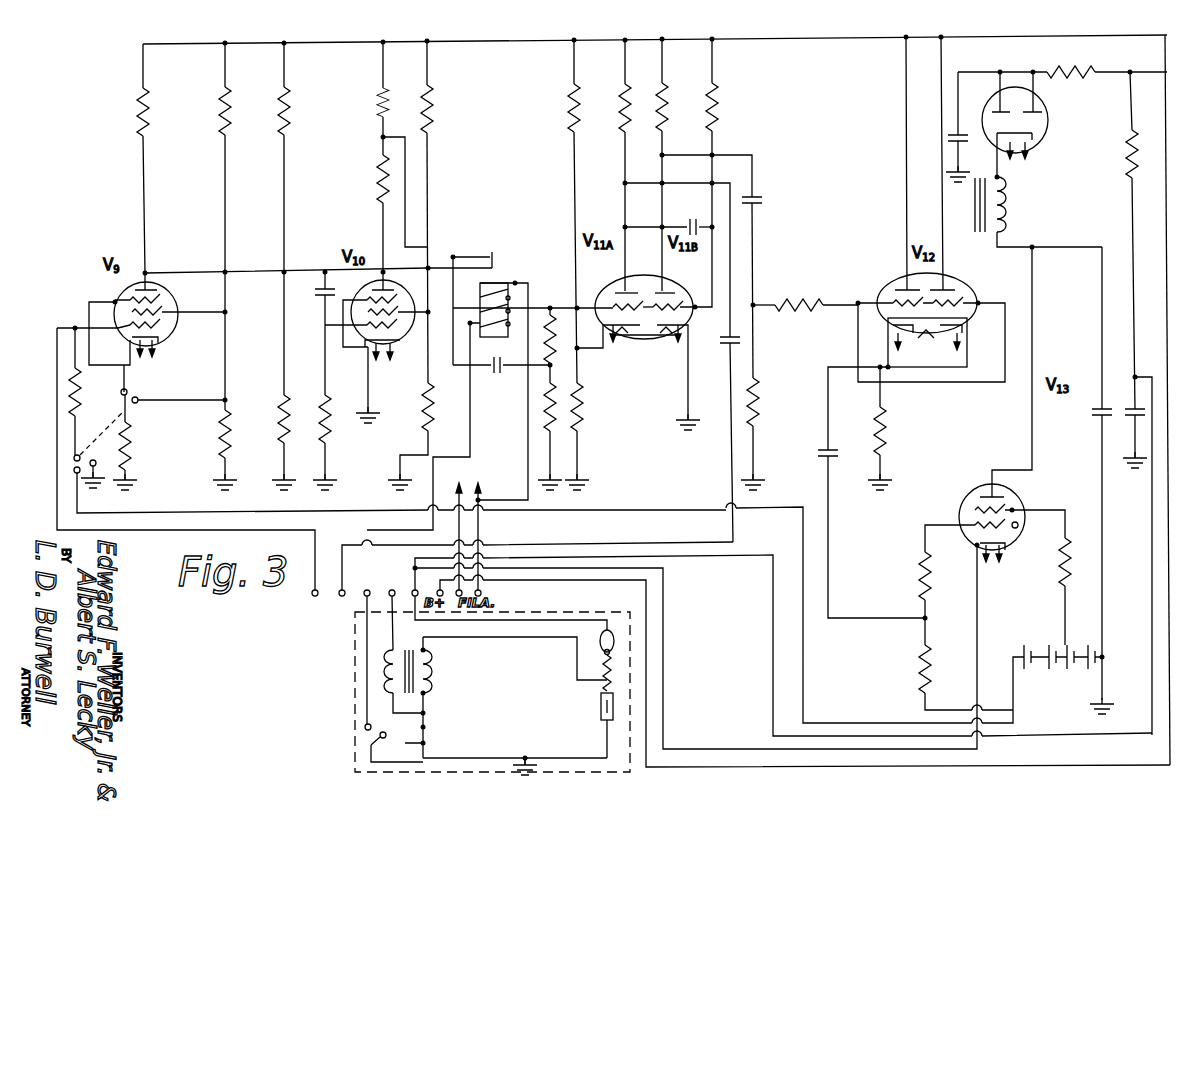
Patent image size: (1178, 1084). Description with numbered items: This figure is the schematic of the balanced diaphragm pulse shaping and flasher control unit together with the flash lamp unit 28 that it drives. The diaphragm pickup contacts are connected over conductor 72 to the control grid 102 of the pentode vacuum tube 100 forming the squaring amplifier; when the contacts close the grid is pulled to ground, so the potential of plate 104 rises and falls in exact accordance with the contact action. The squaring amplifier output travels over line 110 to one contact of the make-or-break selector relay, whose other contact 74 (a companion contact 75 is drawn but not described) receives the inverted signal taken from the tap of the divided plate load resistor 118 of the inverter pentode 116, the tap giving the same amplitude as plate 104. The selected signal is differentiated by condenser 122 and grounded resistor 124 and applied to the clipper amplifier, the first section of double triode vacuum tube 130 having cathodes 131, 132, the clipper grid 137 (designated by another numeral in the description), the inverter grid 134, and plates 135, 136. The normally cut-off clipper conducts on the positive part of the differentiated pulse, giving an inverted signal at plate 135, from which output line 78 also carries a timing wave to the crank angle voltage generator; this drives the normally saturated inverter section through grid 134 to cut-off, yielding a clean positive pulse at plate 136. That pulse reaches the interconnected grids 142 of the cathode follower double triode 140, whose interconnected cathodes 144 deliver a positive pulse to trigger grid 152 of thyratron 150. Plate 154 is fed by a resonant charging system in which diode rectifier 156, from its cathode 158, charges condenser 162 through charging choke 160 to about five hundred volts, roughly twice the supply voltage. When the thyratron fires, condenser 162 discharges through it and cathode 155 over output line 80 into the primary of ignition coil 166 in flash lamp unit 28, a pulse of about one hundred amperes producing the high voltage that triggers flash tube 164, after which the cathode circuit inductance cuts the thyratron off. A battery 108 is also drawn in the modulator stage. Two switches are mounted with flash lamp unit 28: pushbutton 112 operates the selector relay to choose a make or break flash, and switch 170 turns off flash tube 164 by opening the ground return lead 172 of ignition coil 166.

The conductor 72 is at (57, 328).
The relay switch contact 74 is at (515, 252).
The switch contact 75 is at (492, 267).
The output line 78 is at (342, 544).
The output line 80 is at (668, 648).
The pentode vacuum tube 100 is at (178, 298).
The control grid 102 is at (130, 330).
The plate 104 is at (131, 289).
The battery 108 is at (1058, 648).
The line 110 is at (172, 271).
The pushbutton 112 is at (365, 742).
The pentode 116 is at (403, 346).
The divided plate load resistor 118 is at (383, 158).
The condenser 122 is at (500, 373).
The resistor 124 is at (545, 412).
The double triode vacuum tube 130 is at (641, 345).
The cathode 131 is at (611, 341).
The cathode 132 is at (670, 342).
The grid 134 is at (672, 304).
The plate 135 is at (625, 292).
The plate 136 is at (663, 292).
The grid of V11A 137 is at (616, 306).
The double triode vacuum tube 140 is at (951, 270).
The interconnected grids 142 is at (900, 301).
The interconnected cathodes 144 is at (892, 468).
The thyratron 150 is at (1028, 505).
The grid 152 is at (976, 524).
The plate 154 is at (1000, 495).
The cathode 155 is at (1015, 516).
The diode rectifier 156 is at (1040, 102).
The cathode 158 is at (1004, 145).
The charging choke 160 is at (1008, 200).
The condenser 162 is at (1098, 416).
The flash tube 164 is at (600, 706).
The ignition coil 166 is at (390, 684).
The switch 170 is at (428, 732).
The ground return lead 172 is at (524, 758).
The flash lamp unit 28 is at (566, 613).